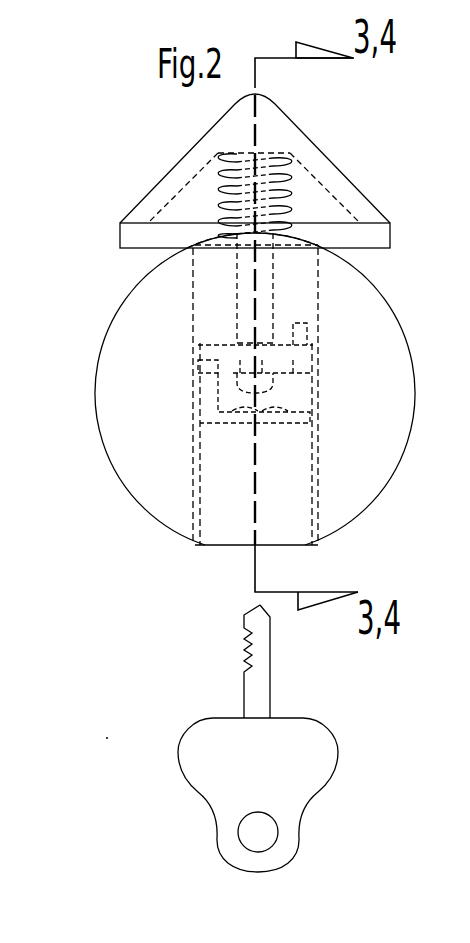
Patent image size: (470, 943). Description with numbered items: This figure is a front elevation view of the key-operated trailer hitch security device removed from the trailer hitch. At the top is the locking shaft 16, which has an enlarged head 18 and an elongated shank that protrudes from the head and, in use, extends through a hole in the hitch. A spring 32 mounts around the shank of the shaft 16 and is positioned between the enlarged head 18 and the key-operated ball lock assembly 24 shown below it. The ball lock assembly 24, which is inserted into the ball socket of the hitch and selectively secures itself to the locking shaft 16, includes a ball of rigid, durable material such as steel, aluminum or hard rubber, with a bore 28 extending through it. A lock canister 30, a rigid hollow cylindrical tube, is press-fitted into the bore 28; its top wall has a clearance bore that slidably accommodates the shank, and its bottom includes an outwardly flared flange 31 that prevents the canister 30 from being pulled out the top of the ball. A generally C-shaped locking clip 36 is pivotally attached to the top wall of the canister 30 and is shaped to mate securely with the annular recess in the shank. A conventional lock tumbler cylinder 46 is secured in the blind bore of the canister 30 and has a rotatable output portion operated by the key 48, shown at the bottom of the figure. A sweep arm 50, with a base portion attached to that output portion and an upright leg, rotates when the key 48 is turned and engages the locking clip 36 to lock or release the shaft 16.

The locking shaft 16 is at (297, 112).
The enlarged head 18 is at (318, 153).
The spring 32 is at (222, 183).
The key-operated ball lock assembly 24 is at (400, 325).
The bore 28 is at (310, 277).
The lock canister 30 is at (217, 310).
The locking clip 36 is at (197, 350).
The sweep arm 50 is at (207, 405).
The lock tumbler cylinder 46 is at (295, 462).
The outwardly flared flange 31 is at (187, 537).
The key 48 is at (318, 742).